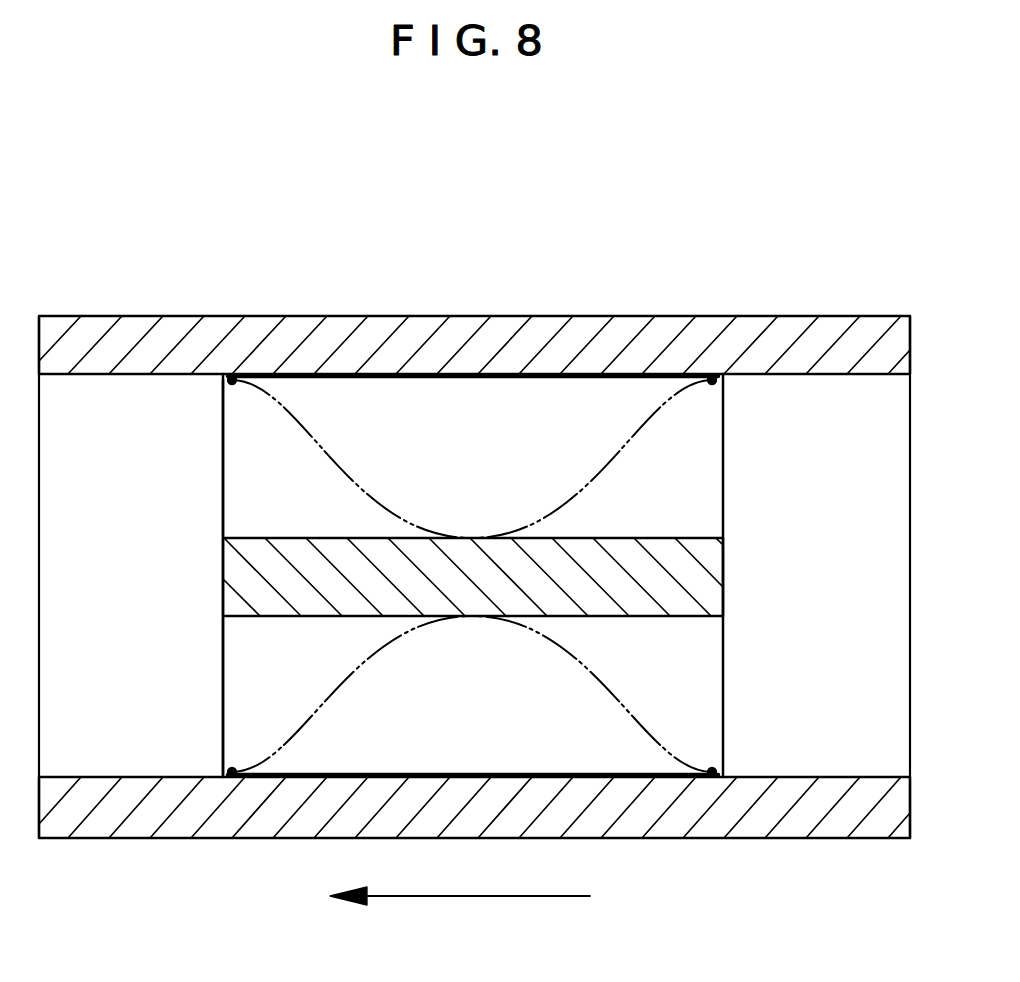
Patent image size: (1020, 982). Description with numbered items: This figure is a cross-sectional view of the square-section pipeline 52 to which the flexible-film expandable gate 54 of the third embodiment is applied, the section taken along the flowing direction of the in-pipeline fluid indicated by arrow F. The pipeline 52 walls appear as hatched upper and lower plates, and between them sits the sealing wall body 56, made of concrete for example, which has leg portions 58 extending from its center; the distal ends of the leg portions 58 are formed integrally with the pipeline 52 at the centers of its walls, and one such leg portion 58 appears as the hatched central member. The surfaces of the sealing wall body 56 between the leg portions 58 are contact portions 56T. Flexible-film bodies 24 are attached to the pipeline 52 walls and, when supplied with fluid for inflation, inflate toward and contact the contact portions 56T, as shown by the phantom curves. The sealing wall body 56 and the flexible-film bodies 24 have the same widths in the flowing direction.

The flexible-film body 24 is at (405, 378).
The pipeline 52 is at (103, 828).
The flexible-film expandable gate 54 is at (213, 405).
The sealing wall body 56 is at (223, 640).
The contact portion 56T is at (237, 462).
The leg portion 58 is at (233, 565).
The direction of fluid flow F is at (452, 898).